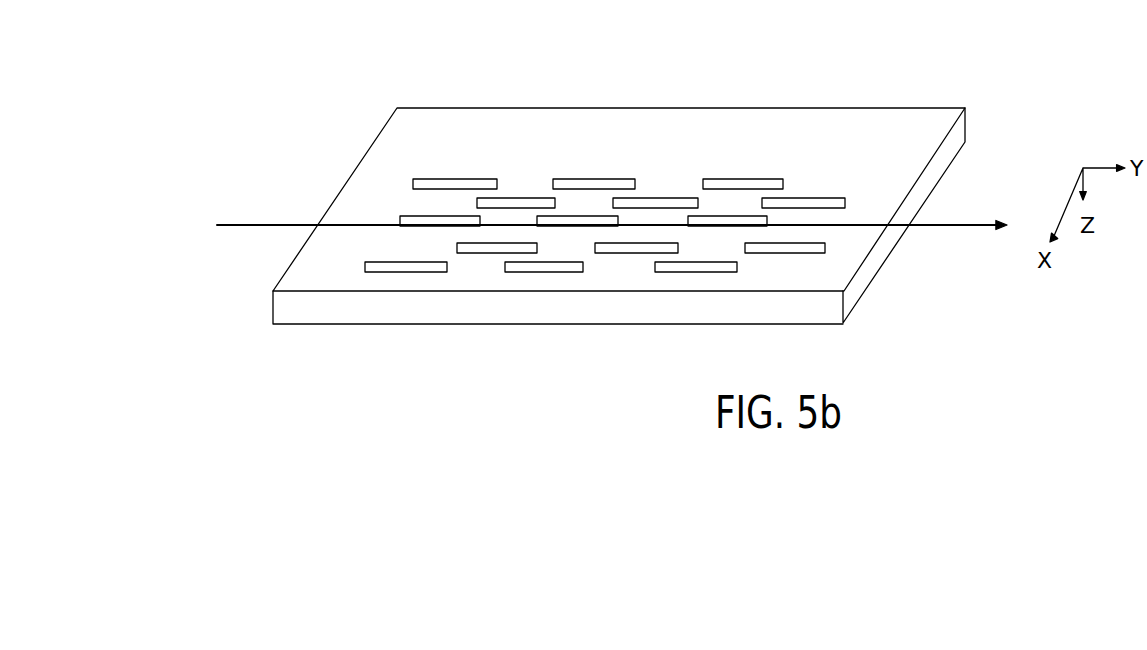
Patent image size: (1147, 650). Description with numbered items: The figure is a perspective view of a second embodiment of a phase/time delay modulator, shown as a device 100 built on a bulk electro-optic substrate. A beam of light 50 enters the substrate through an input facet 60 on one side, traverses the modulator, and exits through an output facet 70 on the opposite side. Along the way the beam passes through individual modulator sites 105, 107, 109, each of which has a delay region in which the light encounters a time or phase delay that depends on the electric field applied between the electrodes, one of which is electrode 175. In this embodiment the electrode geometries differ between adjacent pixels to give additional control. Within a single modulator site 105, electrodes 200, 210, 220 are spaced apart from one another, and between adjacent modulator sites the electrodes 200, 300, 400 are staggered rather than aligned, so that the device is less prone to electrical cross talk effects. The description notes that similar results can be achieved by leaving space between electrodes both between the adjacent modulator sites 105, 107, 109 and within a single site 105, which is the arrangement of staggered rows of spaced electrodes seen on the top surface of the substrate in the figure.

The sensor device 100 is at (619, 193).
The beam of light 50 is at (272, 223).
The input facet 60 is at (348, 177).
The output facet 70 is at (860, 283).
The electrode 175 is at (568, 325).
The electrode 200 is at (455, 180).
The electrode 210 is at (585, 178).
The electrode 220 is at (740, 178).
The electrode 300 is at (512, 198).
The electrode 400 is at (488, 253).
The modulator site 105 is at (677, 127).
The modulator site 107 is at (741, 171).
The modulator site 109 is at (777, 217).